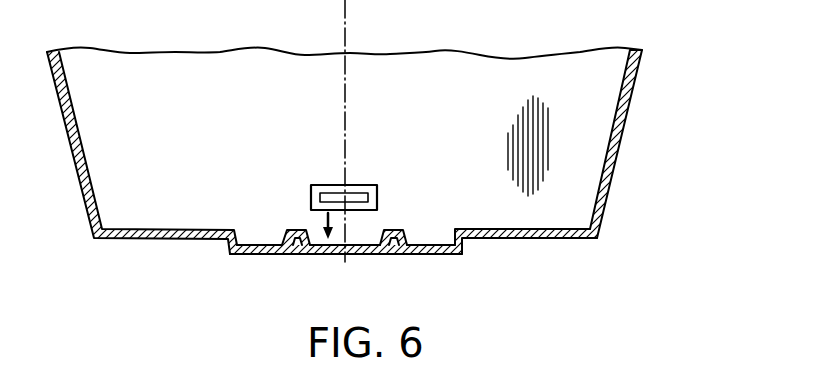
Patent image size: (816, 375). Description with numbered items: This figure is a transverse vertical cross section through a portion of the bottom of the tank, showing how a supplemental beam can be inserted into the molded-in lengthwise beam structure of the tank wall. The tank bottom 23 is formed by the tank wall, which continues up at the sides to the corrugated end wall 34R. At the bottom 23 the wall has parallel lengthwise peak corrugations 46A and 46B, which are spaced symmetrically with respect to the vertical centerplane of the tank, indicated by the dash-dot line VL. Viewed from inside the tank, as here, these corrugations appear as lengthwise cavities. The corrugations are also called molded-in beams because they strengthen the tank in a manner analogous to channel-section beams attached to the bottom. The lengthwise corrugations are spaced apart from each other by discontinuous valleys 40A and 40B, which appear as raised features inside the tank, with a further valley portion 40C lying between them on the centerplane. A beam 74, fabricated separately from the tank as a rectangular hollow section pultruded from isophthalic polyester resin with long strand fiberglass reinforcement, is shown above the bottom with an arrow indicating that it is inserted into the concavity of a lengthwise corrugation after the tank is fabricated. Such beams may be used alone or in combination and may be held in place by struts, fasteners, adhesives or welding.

The tank bottom 23 is at (148, 251).
The end wall 34R is at (602, 128).
The discontinuous valley 40A is at (394, 249).
The discontinuous valley 40B is at (297, 249).
The valley 40C is at (344, 258).
The lengthwise peak corrugation 46A is at (260, 238).
The lengthwise peak corrugation 46B is at (430, 238).
The beam 74 is at (370, 185).
The vertical centerplane line VL is at (346, 19).